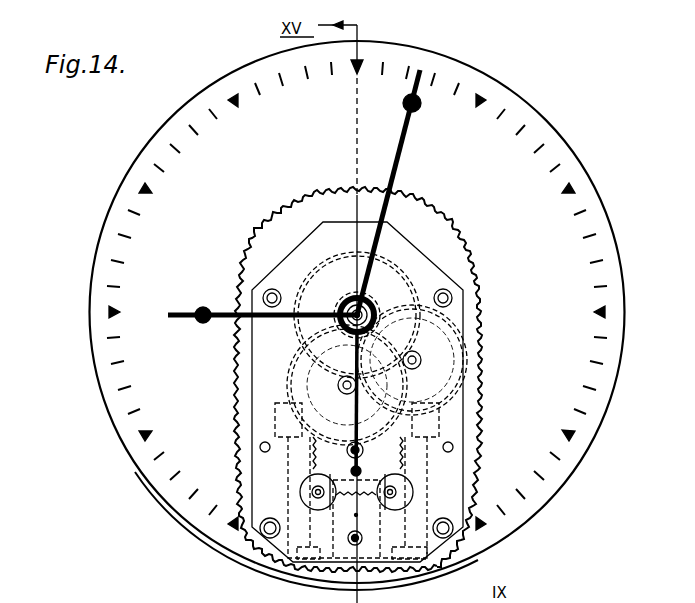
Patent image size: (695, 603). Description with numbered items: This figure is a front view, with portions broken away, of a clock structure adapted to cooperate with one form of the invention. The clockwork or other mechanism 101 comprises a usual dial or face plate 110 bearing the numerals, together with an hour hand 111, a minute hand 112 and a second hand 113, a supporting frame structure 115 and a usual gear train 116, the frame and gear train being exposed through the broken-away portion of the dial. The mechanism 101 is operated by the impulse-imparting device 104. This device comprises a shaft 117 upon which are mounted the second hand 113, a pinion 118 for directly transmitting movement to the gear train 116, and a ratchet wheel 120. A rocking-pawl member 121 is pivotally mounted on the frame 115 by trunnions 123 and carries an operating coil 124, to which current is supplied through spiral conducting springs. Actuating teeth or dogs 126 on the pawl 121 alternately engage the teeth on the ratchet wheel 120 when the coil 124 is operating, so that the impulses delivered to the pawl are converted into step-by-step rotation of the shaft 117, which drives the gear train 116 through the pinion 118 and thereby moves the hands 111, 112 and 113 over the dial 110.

The clockwork or other mechanism 101 is at (682, 293).
The device for imparting impulses to the mechanism 104 is at (413, 575).
The dial or face plate 110 is at (556, 128).
The hour hand 111 is at (204, 307).
The minute hand 112 is at (395, 171).
The second hand 113 is at (340, 390).
The supporting frame structure 115 is at (298, 252).
The gear train or mechanism 116 is at (283, 354).
The shaft 117 is at (363, 453).
The pinion 118 is at (352, 452).
The ratchet wheel 120 is at (326, 489).
The rocking-pawl member 121 is at (330, 515).
The trunnions 123 is at (357, 516).
The operating coil 124 is at (292, 574).
The actuating teeth or dogs 126 is at (303, 500).